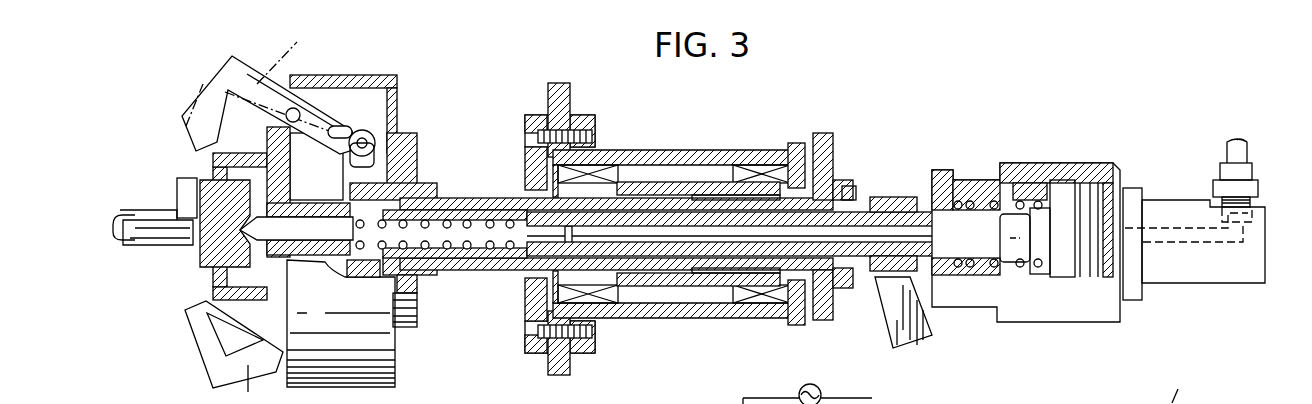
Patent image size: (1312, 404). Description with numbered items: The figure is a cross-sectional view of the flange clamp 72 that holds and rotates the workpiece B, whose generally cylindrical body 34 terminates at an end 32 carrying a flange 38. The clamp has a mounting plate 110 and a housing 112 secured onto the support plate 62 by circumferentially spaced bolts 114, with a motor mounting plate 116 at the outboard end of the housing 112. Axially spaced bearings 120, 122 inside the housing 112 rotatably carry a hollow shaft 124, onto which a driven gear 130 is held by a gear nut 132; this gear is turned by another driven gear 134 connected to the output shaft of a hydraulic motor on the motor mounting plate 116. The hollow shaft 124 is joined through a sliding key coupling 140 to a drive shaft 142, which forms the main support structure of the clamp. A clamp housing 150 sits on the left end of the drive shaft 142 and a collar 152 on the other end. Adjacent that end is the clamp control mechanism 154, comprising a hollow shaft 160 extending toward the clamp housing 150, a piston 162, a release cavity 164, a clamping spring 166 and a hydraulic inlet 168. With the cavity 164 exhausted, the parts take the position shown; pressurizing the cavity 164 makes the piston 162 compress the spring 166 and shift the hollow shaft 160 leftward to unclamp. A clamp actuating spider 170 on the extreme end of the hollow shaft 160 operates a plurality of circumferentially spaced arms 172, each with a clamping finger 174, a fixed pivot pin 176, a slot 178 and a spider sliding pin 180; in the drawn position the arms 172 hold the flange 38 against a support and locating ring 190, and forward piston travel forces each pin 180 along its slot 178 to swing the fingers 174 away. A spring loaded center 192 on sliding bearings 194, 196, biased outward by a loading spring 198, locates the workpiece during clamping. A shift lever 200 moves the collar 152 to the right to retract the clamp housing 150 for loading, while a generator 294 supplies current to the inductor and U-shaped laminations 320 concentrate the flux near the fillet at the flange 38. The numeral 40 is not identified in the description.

The end 32 is at (193, 253).
The cylindrical body 34 is at (123, 240).
The flange 38 is at (210, 173).
The shaft 40 is at (157, 245).
The support plate 62 is at (560, 82).
The flange clamp 72 is at (753, 137).
The mounting plate 110 is at (533, 115).
The housing 112 is at (607, 150).
The bolts 114 is at (582, 128).
The motor mounting plate 116 is at (797, 143).
The bearing 120 is at (547, 175).
The bearing 122 is at (747, 167).
The hollow shaft 124 is at (653, 180).
The driven gear 130 is at (841, 181).
The gear nut 132 is at (851, 186).
The driven gear 134 is at (823, 133).
The sliding key coupling 140 is at (527, 197).
The drive shaft 142 is at (712, 207).
The clamp housing 150 is at (337, 72).
The collar 152 is at (890, 197).
The clamp control mechanism 154 is at (1060, 163).
The hollow shaft 160 is at (982, 218).
The piston 162 is at (1075, 190).
The release cavity 164 is at (1103, 193).
The clamping spring 166 is at (1017, 218).
The hydraulic inlet 168 is at (1242, 150).
The clamp actuating spider 170 is at (248, 401).
The arms 172 is at (325, 100).
The clamping finger 174 is at (212, 155).
The fixed pivot pin 176 is at (292, 108).
The slot 178 is at (337, 130).
The spider sliding pin 180 is at (367, 140).
The support and locating ring 190 is at (262, 150).
The spring loaded center 192 is at (308, 218).
The sliding bearing 194 is at (520, 258).
The sliding bearing 196 is at (968, 272).
The loading spring 198 is at (460, 253).
The shift lever 200 is at (890, 332).
The generator 294 is at (790, 387).
The U-shaped laminations 320 is at (178, 185).
The workpiece B is at (108, 224).